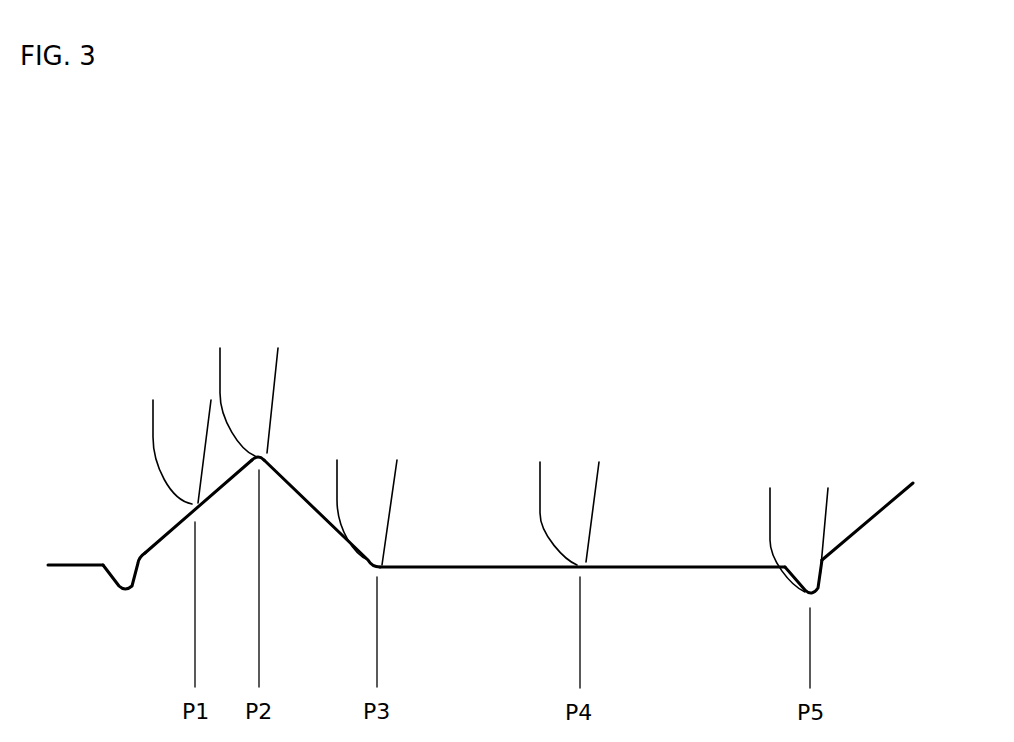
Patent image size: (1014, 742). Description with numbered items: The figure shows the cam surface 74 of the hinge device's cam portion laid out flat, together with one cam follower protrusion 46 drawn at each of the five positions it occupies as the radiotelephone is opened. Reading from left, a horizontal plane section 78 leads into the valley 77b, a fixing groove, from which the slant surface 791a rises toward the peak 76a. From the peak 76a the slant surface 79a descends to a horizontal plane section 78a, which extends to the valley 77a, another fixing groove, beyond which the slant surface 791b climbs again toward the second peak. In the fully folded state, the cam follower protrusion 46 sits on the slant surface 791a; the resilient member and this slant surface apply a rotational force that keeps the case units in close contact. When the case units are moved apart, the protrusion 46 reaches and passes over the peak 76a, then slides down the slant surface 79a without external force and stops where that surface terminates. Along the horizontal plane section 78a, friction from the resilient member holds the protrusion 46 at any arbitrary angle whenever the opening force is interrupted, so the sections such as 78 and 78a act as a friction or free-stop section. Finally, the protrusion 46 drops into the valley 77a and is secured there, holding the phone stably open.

The cam follower protrusion 46 is at (158, 433).
The cam surface 74 is at (480, 509).
The peak 76a is at (265, 462).
The valley 77a is at (807, 596).
The valley 77b is at (127, 590).
The horizontal plane section 78 is at (67, 565).
The horizontal plane section 78a is at (513, 567).
The slant surface 79a is at (300, 488).
The slant surface 791a is at (165, 532).
The slant surface 791b is at (895, 495).